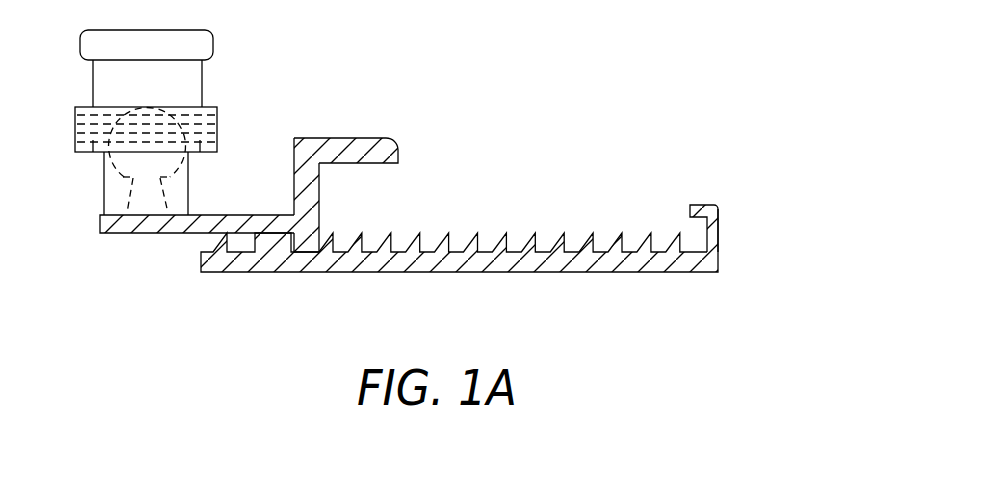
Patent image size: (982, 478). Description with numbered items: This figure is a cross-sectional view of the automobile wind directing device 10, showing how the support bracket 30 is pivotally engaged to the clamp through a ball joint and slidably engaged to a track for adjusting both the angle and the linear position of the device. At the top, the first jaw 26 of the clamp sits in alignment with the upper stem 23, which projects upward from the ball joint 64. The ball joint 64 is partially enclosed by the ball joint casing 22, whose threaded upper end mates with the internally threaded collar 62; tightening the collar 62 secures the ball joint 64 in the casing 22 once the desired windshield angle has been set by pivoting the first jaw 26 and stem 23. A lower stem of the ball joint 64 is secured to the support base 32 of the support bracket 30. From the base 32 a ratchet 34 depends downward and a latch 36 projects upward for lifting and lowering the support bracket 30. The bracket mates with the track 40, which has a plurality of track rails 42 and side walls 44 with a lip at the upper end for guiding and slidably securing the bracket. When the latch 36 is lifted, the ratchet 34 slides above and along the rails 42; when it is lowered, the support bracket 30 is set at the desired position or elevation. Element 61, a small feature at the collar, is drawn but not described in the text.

The automobile wind directing device 10 is at (590, 48).
The ball joint casing 22 is at (190, 182).
The upper stem 23 is at (202, 80).
The first jaw 26 is at (210, 32).
The support bracket 30 is at (370, 125).
The support base 32 is at (147, 233).
The ratchet 34 is at (310, 222).
The latch 36 is at (398, 156).
The track 40 is at (737, 237).
The track rails 42 is at (512, 236).
The side walls 44 is at (704, 205).
The retaining pins 61 is at (95, 143).
The internally threaded collar 62 is at (218, 126).
The ball joint 64 is at (128, 177).